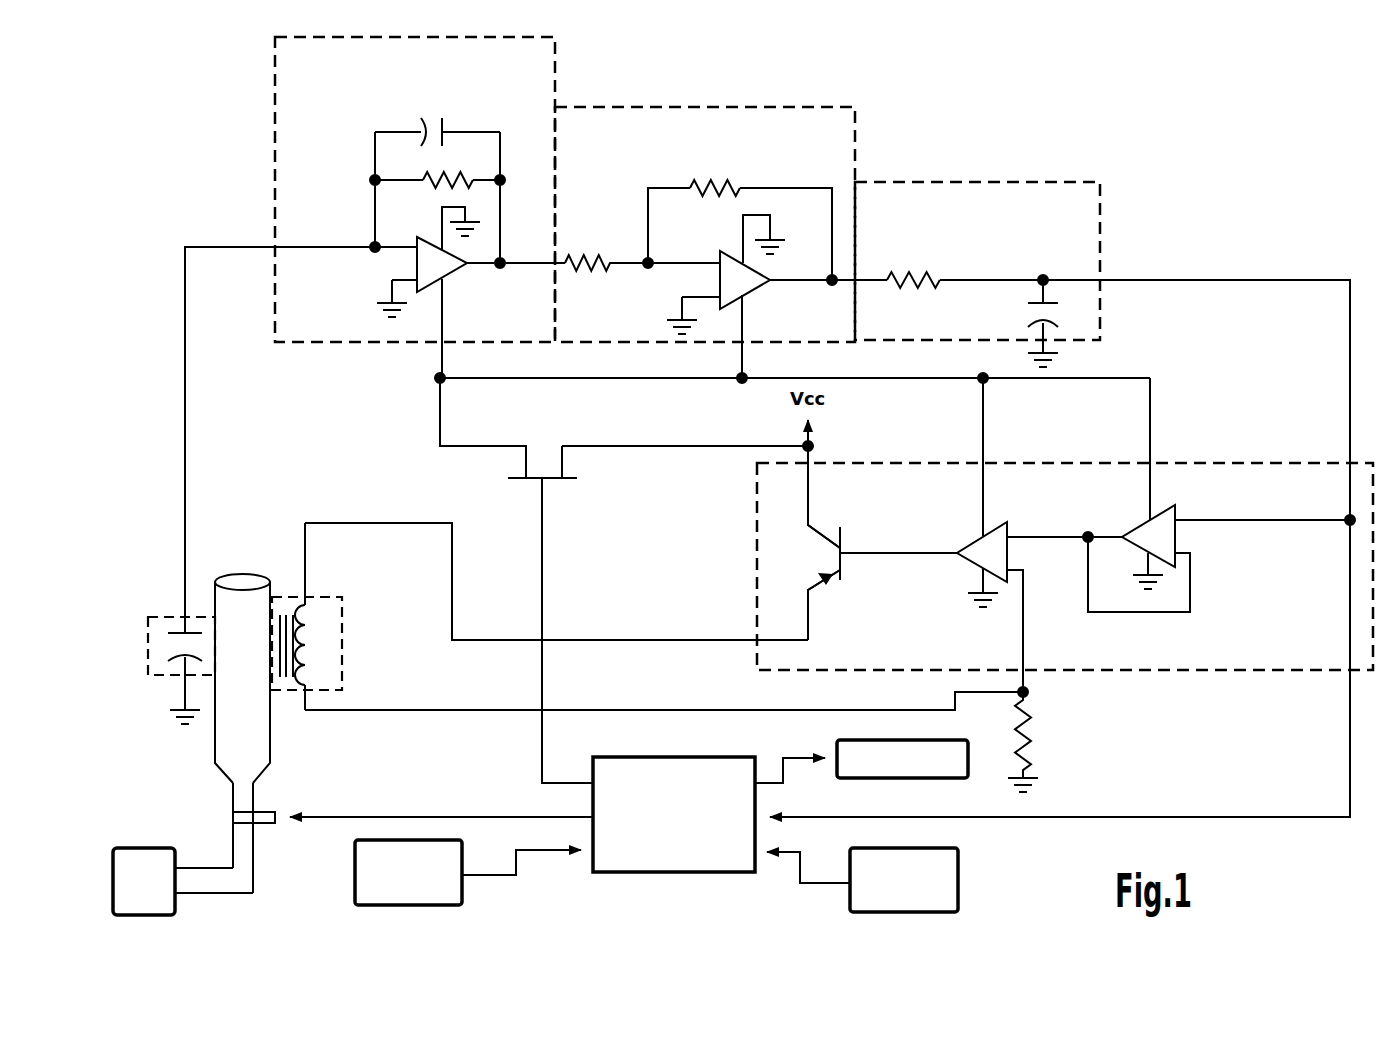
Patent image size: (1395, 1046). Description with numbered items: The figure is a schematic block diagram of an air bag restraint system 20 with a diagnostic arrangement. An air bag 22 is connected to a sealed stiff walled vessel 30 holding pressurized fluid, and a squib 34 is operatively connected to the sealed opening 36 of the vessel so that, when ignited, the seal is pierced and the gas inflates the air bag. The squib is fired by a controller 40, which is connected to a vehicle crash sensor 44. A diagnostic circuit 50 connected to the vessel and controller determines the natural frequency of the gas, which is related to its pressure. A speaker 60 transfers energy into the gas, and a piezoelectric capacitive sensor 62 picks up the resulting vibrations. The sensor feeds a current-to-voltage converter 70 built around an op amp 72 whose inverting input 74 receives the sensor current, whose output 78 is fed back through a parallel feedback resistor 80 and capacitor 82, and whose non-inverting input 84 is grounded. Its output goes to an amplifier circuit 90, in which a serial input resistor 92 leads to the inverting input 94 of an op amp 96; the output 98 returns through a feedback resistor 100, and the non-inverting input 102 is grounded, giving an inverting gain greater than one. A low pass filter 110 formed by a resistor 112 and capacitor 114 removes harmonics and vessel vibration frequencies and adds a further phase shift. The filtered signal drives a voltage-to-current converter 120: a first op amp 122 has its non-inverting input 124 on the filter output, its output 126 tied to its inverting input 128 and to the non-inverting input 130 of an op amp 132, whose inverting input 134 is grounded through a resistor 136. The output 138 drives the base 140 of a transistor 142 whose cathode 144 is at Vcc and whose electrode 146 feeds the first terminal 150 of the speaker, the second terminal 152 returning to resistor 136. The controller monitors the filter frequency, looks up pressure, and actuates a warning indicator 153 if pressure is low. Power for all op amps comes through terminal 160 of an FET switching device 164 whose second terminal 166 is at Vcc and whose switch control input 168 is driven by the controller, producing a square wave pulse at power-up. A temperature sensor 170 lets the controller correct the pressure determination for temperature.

The air bag restraint system 20 is at (137, 215).
The air bag 22 is at (137, 848).
The sealed stiff walled vessel 30 is at (243, 723).
The squib 34 is at (267, 823).
The sealed opening 36 is at (232, 795).
The controller 40 is at (677, 757).
The vehicle crash sensor 44 is at (865, 906).
The diagnostic circuit 50 is at (158, 477).
The speaker 60 is at (330, 637).
The piezoelectric capacitive sensor 62 is at (162, 616).
The current-to-voltage converter 70 is at (275, 133).
The operational amplifier 72 is at (447, 268).
The inverting input 74 is at (413, 243).
The output 78 is at (442, 262).
The feedback resistor 80 is at (423, 176).
The capacitor 82 is at (444, 118).
The non-inverting input 84 is at (417, 278).
The amplifier circuit 90 is at (752, 107).
The serial input resistor 92 is at (603, 270).
The inverting input 94 is at (717, 262).
The op amp 96 is at (748, 282).
The output 98 is at (747, 285).
The feedback resistor 100 is at (692, 188).
The non-inverting input 102 is at (720, 297).
The low pass filter 110 is at (987, 182).
The resistor 112 is at (940, 283).
The capacitor 114 is at (1037, 303).
The voltage-to-current converter 120 is at (948, 463).
The first op amp 122 is at (1140, 523).
The non-inverting input 124 is at (1180, 518).
The output 126 is at (1127, 545).
The inverting input 128 is at (1183, 550).
The non-inverting input 130 is at (1007, 540).
The op amp 132 is at (975, 570).
The inverting input 134 is at (1018, 575).
The resistor 136 is at (1040, 737).
The output 138 is at (960, 553).
The base 140 is at (842, 556).
The transistor 142 is at (806, 553).
The cathode 144 is at (806, 528).
The electrode 146 is at (818, 578).
The first terminal 150 is at (305, 600).
The second terminal 152 is at (305, 700).
The warning indicator 153 is at (893, 780).
The terminal 160 is at (525, 446).
The solid state switching device 164 is at (512, 459).
The second terminal 166 is at (568, 443).
The switch control input 168 is at (544, 482).
The temperature sensor 170 is at (442, 902).